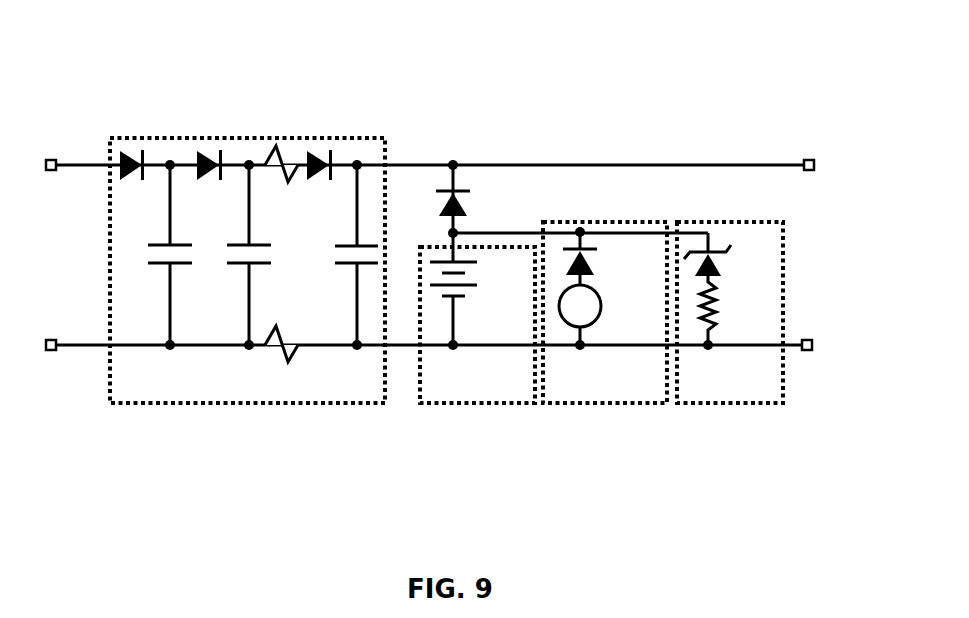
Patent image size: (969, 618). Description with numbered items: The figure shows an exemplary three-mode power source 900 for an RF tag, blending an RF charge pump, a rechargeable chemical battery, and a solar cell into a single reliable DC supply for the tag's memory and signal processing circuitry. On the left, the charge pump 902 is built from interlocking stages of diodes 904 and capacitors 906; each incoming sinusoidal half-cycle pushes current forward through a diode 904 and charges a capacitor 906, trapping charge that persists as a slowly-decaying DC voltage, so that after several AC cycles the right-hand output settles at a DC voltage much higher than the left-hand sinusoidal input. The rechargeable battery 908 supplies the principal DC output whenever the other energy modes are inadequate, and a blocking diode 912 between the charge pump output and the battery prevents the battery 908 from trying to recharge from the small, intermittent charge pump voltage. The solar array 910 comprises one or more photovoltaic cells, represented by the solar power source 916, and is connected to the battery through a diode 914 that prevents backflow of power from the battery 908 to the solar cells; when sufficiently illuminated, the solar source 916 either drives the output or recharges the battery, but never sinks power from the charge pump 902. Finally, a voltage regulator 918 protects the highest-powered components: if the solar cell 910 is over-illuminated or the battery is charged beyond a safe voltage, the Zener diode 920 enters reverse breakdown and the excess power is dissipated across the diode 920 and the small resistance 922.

The three-mode power source 900 is at (304, 465).
The charge pump 902 is at (337, 138).
The diode 904 is at (230, 191).
The capacitor 906 is at (254, 255).
The rechargeable battery 908 is at (433, 403).
The solar array 910 is at (638, 316).
The blocking diode 912 is at (463, 200).
The diode 914 is at (590, 265).
The solar power source 916 is at (601, 315).
The voltage regulator 918 is at (782, 332).
The Zener diode 920 is at (721, 262).
The resistance 922 is at (721, 317).